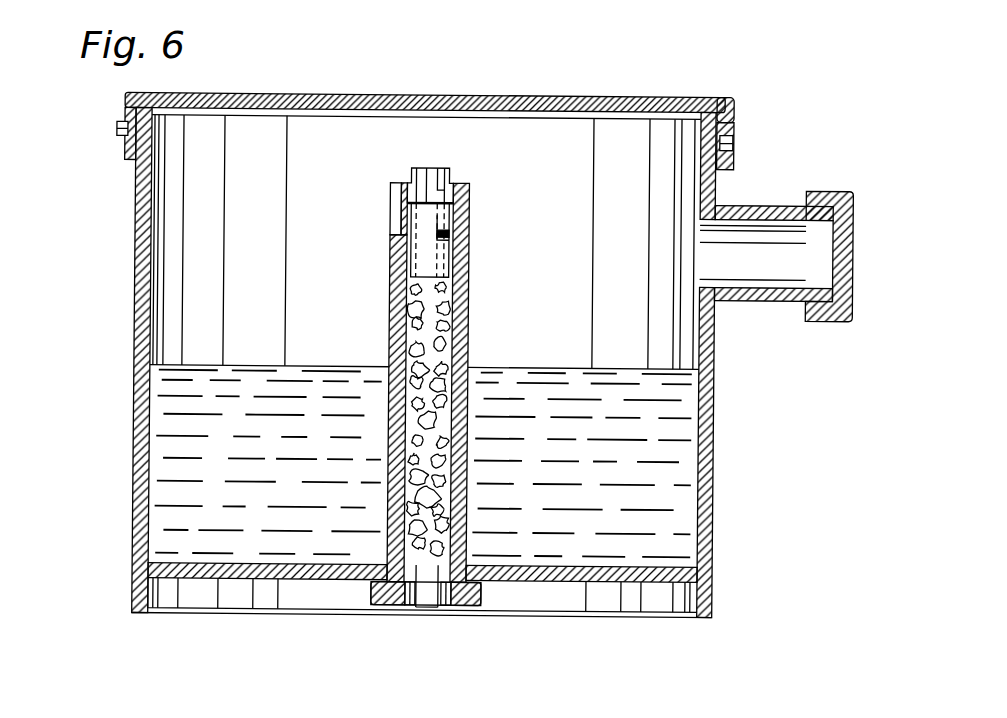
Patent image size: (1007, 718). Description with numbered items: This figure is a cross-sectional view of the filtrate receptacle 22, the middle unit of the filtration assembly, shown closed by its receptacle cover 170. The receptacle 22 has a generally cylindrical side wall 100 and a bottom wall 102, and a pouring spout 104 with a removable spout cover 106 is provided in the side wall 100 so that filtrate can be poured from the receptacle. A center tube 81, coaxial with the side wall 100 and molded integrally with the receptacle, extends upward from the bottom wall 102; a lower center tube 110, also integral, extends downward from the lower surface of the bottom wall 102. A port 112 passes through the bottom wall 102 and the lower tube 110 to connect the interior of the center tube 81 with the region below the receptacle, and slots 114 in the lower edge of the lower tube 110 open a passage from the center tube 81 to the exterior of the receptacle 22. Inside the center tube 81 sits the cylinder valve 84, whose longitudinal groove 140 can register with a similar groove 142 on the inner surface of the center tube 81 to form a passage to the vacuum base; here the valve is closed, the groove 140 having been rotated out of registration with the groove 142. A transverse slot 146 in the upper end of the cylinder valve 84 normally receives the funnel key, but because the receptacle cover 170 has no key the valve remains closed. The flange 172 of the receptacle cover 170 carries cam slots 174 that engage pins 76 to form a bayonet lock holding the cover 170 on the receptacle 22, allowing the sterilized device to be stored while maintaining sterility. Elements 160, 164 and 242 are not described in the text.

The filtrate receptacle 22 is at (437, 363).
The pins 76 is at (117, 130).
The center tube 81 is at (426, 356).
The cylinder valve 84 is at (437, 235).
The side wall 100 is at (137, 347).
The bottom wall 102 is at (252, 580).
The pouring spout 104 is at (786, 288).
The spout cover 106 is at (843, 318).
The lower center tube 110 is at (397, 607).
The port 112 is at (452, 605).
The slots 114 is at (440, 608).
The groove 140 is at (413, 255).
The groove 142 is at (400, 217).
The transverse slot 146 is at (440, 168).
The bottom fitting 160 is at (442, 631).
The base 164 is at (454, 626).
The filtrate receptacle cover 170 is at (428, 107).
The flange 172 is at (121, 148).
The cam slots 174 is at (735, 135).
The lid rim 242 is at (722, 99).